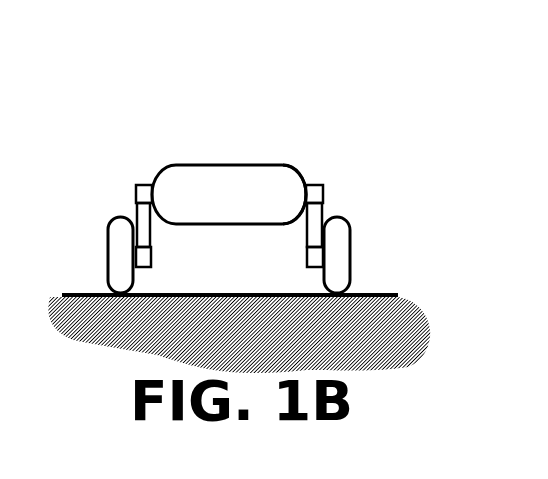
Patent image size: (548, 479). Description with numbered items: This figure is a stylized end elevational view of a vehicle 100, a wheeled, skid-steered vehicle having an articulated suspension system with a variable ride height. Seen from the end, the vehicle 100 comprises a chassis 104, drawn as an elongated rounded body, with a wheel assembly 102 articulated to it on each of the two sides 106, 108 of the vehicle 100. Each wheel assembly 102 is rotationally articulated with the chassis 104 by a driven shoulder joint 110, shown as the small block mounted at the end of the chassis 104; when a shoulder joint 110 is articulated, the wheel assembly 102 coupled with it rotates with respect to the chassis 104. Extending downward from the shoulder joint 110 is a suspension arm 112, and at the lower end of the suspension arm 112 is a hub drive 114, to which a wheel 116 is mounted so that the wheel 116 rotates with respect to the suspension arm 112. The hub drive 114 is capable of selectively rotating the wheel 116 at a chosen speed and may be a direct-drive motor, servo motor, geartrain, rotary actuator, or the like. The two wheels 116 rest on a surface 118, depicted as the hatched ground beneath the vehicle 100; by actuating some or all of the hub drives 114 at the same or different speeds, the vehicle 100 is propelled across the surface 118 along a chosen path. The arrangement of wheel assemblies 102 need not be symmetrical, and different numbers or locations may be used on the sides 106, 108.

The vehicle 100 is at (309, 66).
The wheel assembly 102 is at (360, 115).
The chassis 104 is at (237, 165).
The side of the vehicle 106 is at (303, 172).
The side of the vehicle 108 is at (153, 182).
The shoulder joint 110 is at (324, 195).
The suspension arm 112 is at (323, 218).
The hub drive 114 is at (307, 257).
The wheel 116 is at (351, 238).
The surface 118 is at (67, 293).